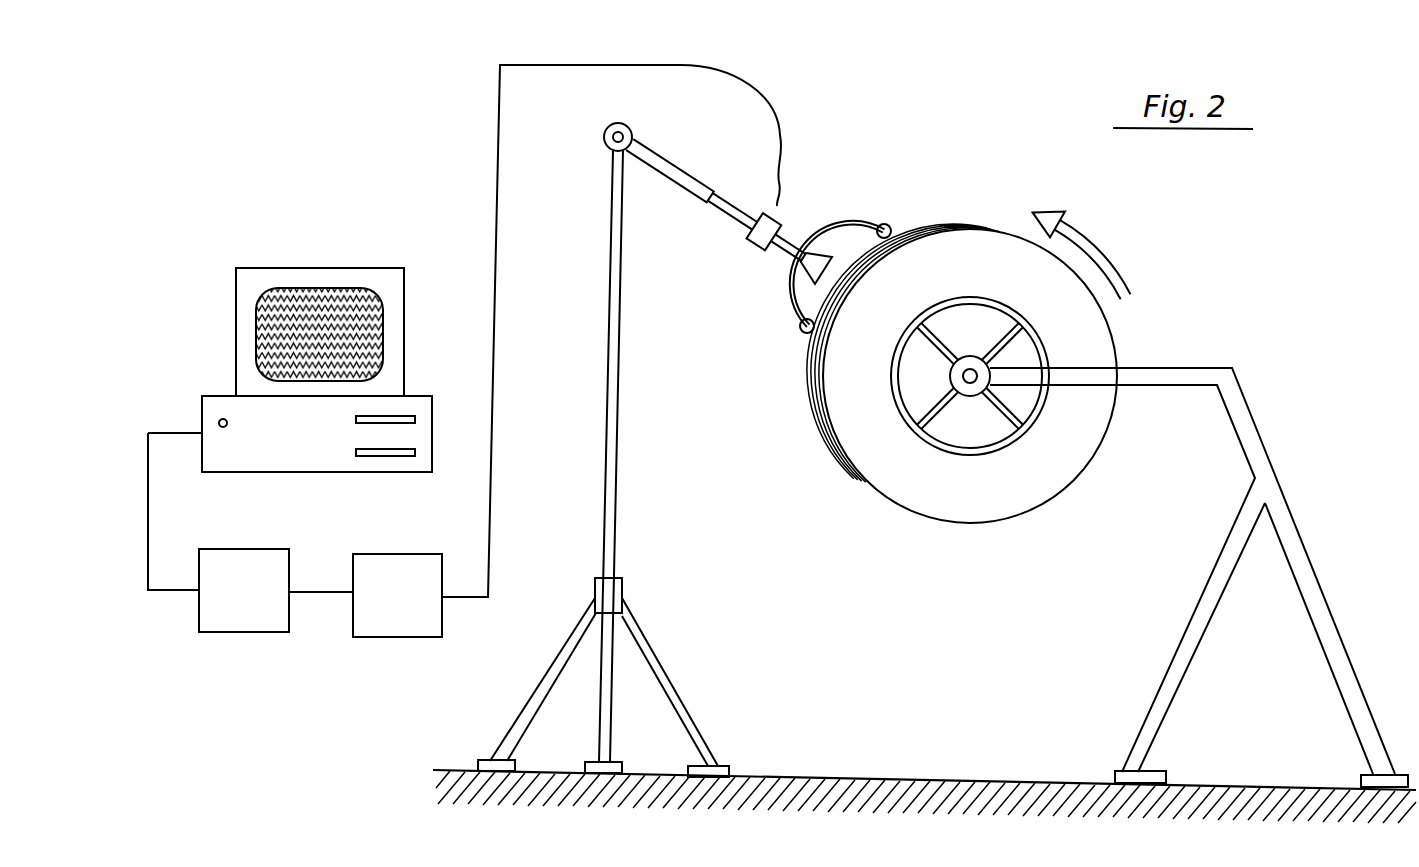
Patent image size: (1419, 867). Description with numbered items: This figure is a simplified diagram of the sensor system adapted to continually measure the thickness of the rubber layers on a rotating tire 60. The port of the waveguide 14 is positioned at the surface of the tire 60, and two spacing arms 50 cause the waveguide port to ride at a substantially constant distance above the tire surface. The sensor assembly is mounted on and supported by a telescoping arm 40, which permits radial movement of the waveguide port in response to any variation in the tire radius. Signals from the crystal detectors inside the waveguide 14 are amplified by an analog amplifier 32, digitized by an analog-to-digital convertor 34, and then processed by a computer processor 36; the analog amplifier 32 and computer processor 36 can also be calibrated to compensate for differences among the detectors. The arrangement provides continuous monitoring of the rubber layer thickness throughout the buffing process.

The waveguide 14 is at (797, 224).
The analog amplifier 32 is at (410, 637).
The analog-to-digital convertor 34 is at (263, 632).
The computer processor 36 is at (311, 268).
The telescoping arm 40 is at (657, 189).
The spacing arms 50 is at (866, 213).
The rotating tire 60 is at (1007, 490).